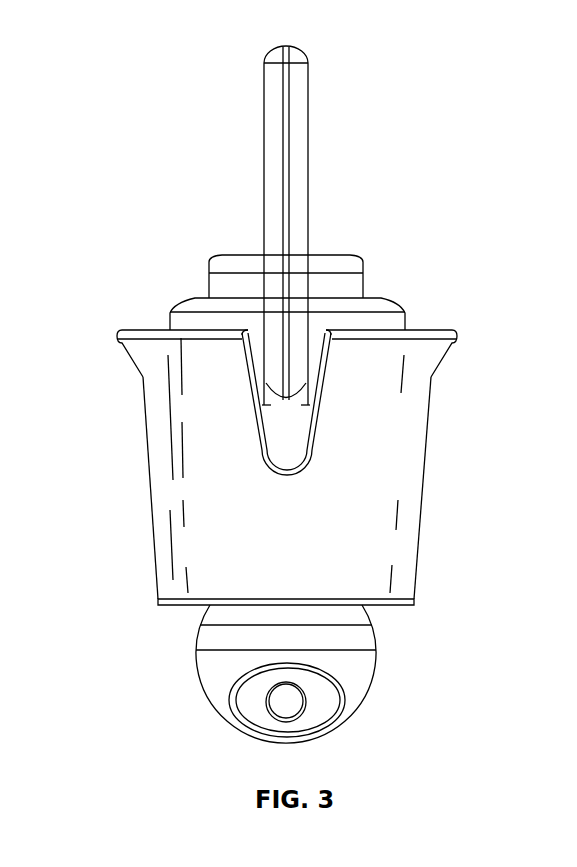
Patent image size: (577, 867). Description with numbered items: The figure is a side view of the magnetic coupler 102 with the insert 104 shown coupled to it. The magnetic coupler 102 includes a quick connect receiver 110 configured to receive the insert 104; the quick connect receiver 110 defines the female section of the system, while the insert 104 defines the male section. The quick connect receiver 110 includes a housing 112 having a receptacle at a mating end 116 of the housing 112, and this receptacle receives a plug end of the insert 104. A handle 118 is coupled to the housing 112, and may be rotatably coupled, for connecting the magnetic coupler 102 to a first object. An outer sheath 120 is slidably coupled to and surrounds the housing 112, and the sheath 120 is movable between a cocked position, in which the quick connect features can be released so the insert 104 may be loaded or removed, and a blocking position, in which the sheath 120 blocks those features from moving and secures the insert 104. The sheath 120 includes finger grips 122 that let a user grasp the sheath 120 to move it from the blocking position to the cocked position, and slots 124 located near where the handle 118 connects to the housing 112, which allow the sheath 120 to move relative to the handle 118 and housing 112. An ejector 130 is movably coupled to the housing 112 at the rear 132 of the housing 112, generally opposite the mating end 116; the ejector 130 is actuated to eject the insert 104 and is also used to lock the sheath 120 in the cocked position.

The magnetic coupler 102 is at (388, 178).
The insert 104 is at (360, 715).
The quick connect receiver 110 is at (278, 431).
The housing 112 is at (404, 318).
The mating end 116 is at (387, 607).
The handle 118 is at (299, 146).
The outer sheath 120 is at (163, 575).
The finger grips 122 is at (117, 341).
The slots 124 is at (278, 448).
The ejector 130 is at (233, 256).
The rear 132 is at (176, 300).